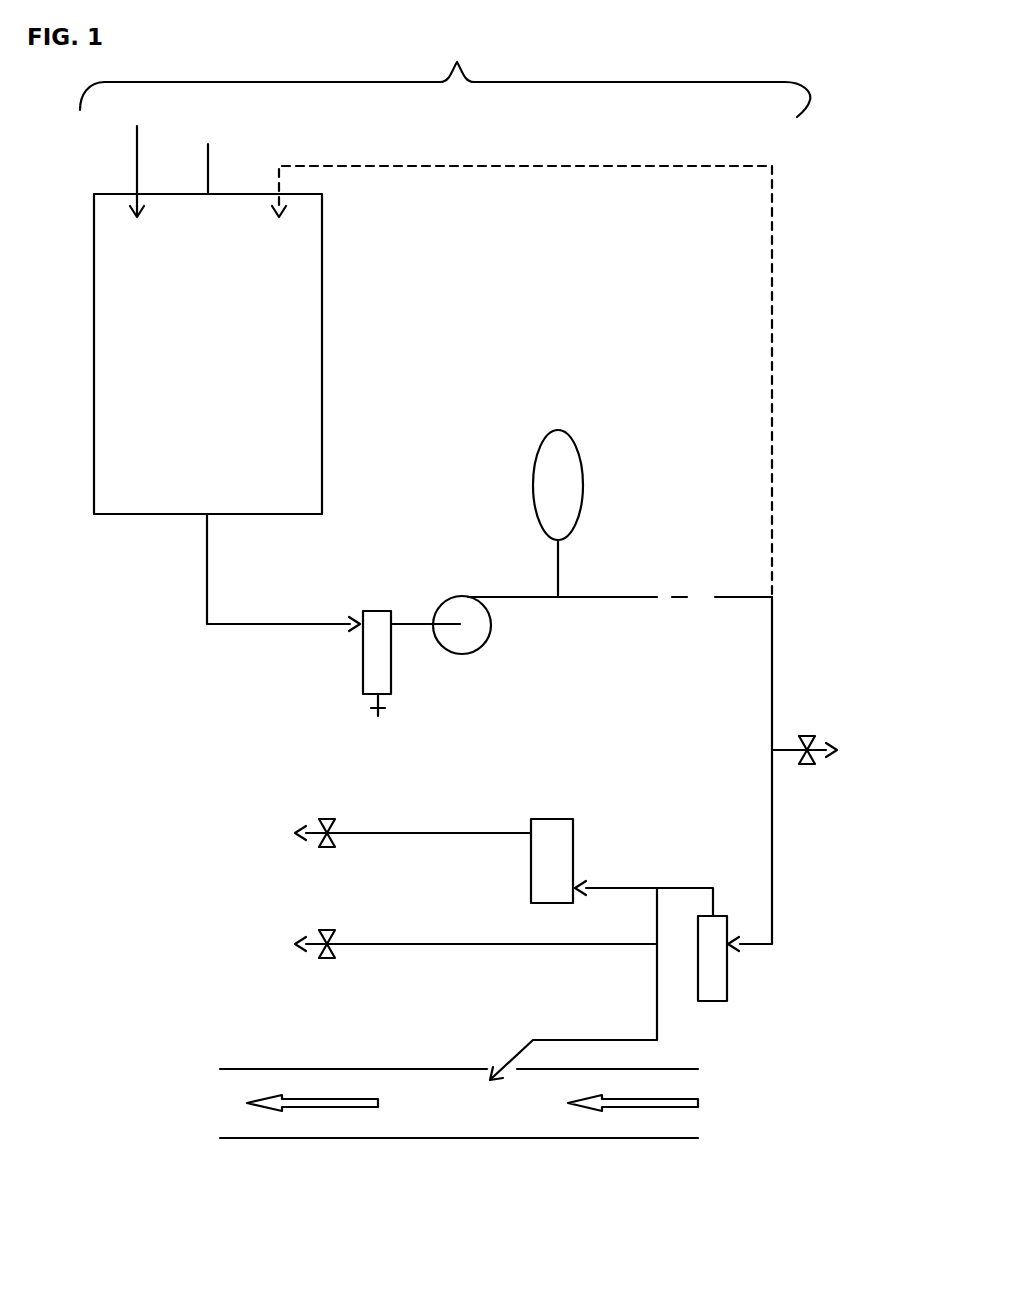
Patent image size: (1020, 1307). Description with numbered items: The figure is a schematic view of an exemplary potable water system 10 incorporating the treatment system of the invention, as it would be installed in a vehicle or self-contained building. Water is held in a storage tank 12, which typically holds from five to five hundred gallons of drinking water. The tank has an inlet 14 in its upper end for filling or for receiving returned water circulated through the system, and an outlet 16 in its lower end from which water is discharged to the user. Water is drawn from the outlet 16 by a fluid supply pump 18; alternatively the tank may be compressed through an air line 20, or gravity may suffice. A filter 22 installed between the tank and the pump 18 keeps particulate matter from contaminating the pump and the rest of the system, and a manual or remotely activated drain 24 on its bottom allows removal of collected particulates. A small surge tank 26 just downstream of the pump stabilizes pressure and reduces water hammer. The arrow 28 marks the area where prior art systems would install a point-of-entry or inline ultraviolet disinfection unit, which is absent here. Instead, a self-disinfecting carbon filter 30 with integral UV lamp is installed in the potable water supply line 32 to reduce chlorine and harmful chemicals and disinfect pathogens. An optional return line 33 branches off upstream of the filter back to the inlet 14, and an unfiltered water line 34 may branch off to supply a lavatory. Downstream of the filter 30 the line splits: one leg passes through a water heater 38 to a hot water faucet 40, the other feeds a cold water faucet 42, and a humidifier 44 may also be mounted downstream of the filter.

The potable water system 10 is at (445, 76).
The storage tank 12 is at (322, 415).
The inlet 14 is at (210, 145).
The outlet 16 is at (214, 524).
The fluid supply pump 18 is at (485, 645).
The air line 20 is at (137, 126).
The filter 22 is at (358, 672).
The drain 24 is at (383, 712).
The surge tank 26 is at (572, 432).
The arrow 28 is at (682, 588).
The self-disinfecting carbon filter 30 is at (732, 965).
The potable water supply line 32 is at (772, 847).
The return line 33 is at (287, 158).
The unfiltered water line 34 is at (813, 727).
The water heater 38 is at (576, 820).
The hot water faucet 40 is at (287, 833).
The cold water faucet 42 is at (290, 945).
The humidifier 44 is at (505, 1138).